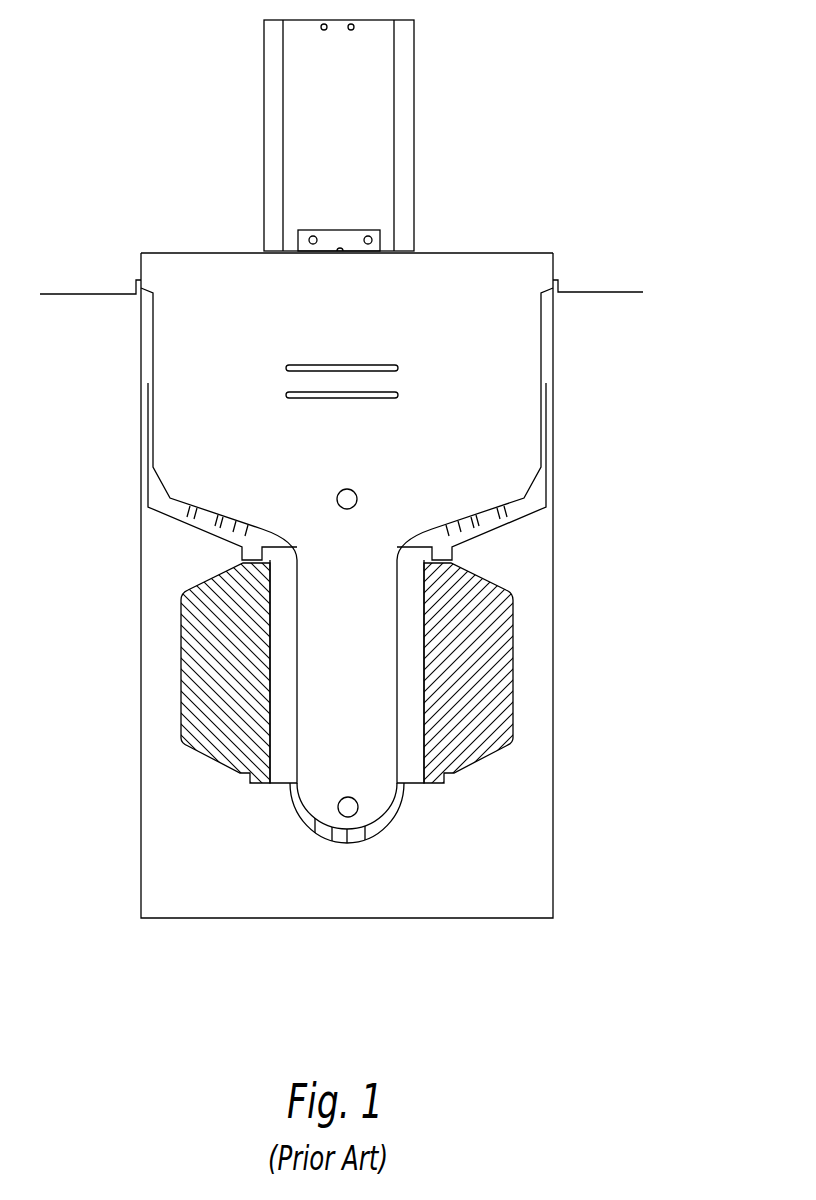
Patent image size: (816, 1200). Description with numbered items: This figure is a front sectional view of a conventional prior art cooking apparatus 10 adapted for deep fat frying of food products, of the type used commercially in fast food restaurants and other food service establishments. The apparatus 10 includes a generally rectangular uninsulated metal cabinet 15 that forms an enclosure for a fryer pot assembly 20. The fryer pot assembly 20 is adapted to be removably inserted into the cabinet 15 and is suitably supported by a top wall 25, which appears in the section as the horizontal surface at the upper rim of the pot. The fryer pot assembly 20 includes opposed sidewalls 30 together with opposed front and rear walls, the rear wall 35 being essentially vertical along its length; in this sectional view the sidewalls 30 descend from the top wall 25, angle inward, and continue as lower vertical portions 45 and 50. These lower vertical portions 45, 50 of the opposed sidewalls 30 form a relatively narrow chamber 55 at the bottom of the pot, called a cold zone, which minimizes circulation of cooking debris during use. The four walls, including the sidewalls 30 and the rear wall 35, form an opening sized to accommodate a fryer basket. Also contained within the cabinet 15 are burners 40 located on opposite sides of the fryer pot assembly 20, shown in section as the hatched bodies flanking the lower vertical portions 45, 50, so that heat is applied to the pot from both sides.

The cooking apparatus 10 is at (535, 122).
The cabinet 15 is at (557, 522).
The fryer pot assembly 20 is at (212, 272).
The top wall 25 is at (592, 291).
The sidewalls 30 is at (152, 447).
The rear wall 35 is at (188, 390).
The burners 40 is at (183, 623).
The lower vertical portion 45 is at (297, 695).
The lower vertical portion 50 is at (399, 688).
The chamber 55 is at (370, 804).